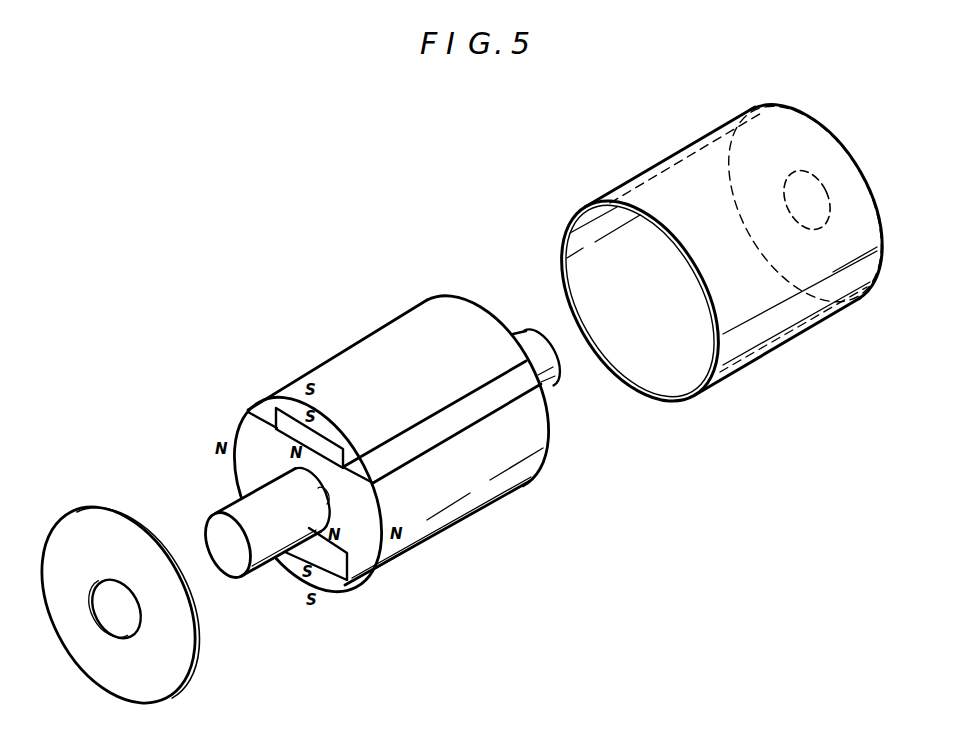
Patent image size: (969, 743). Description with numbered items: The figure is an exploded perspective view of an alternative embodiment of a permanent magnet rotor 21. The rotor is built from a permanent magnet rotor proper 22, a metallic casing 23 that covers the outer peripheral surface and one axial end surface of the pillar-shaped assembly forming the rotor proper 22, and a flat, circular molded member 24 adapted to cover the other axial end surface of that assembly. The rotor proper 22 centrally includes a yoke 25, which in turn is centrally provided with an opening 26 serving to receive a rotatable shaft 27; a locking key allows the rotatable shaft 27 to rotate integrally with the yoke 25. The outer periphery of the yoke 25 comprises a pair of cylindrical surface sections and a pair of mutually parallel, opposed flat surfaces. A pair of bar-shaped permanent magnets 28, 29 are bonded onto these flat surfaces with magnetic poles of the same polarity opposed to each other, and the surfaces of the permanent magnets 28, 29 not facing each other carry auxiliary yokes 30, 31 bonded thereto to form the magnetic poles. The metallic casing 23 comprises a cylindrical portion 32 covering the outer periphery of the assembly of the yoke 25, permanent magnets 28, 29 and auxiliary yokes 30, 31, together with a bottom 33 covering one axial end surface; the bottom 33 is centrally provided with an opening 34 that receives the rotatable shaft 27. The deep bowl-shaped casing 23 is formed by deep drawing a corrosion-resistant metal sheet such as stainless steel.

The permanent magnet rotor 21 is at (331, 204).
The permanent magnet rotor proper 22 is at (407, 304).
The metallic casing 23 is at (693, 131).
The flat, circular molded member 24 is at (109, 498).
The yoke 25 is at (536, 434).
The opening 26 is at (421, 522).
The rotatable shaft 27 is at (263, 545).
The bar-shaped permanent magnet 28 is at (262, 402).
The bar-shaped permanent magnet 29 is at (348, 562).
The auxiliary yoke 30 is at (347, 367).
The auxiliary yoke 31 is at (336, 582).
The cylindrical portion 32 is at (641, 172).
The bottom 33 is at (841, 305).
The opening 34 is at (814, 178).